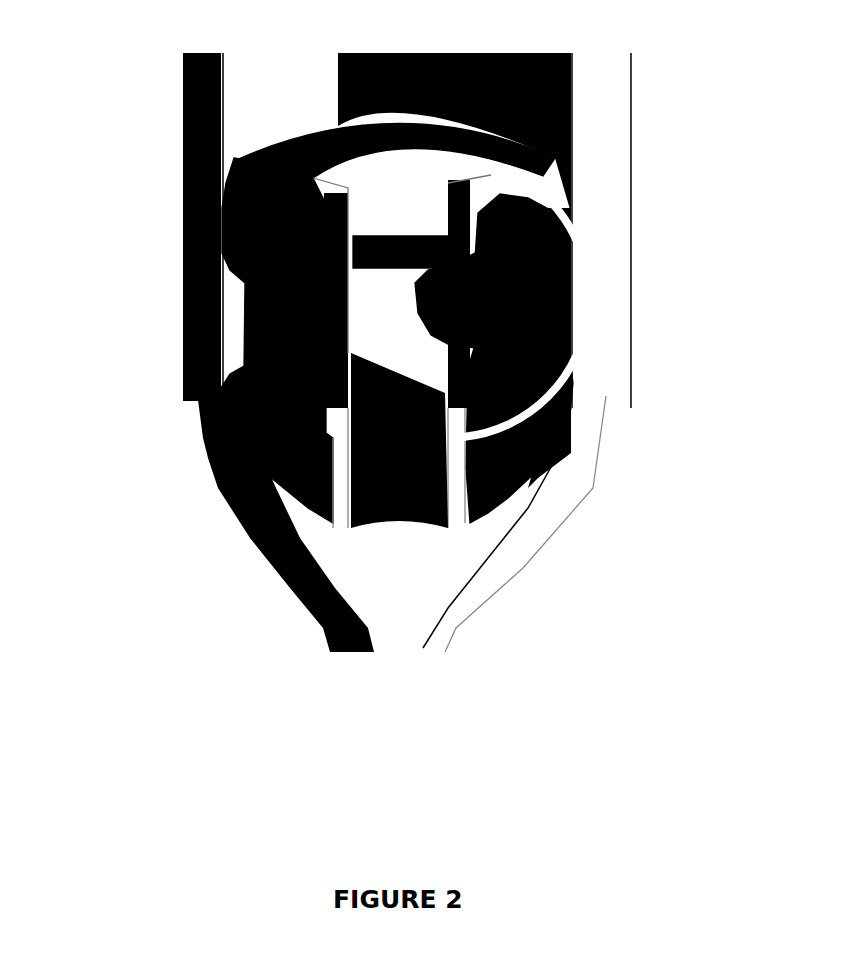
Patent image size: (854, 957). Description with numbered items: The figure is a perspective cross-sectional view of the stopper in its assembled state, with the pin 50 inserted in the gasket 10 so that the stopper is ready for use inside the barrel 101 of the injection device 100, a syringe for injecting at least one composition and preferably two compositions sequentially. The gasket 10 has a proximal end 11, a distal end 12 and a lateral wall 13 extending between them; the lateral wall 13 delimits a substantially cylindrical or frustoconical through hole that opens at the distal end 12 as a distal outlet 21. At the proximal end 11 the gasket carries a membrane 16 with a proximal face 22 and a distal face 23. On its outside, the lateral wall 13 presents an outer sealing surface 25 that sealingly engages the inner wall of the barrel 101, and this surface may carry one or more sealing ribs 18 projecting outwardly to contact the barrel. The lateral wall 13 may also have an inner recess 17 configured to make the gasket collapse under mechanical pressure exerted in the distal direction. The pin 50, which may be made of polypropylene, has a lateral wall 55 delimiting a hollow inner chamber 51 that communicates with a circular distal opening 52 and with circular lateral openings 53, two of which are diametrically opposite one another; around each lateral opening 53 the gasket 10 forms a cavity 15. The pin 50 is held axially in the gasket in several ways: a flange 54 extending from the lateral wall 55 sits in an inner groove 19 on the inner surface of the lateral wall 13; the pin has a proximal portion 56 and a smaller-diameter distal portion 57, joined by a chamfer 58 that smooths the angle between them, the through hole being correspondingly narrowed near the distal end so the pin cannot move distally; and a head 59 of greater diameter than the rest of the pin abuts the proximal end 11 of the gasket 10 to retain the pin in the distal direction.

The injection device 100 is at (178, 70).
The barrel 101 is at (582, 78).
The gasket 10 is at (238, 275).
The proximal end 11 is at (383, 122).
The distal end 12 is at (477, 502).
The lateral wall 13 is at (237, 340).
The cavity 15 is at (492, 278).
The membrane 16 is at (497, 193).
The inner recess 17 is at (537, 313).
The sealing rib 18 is at (218, 235).
The inner groove 19 is at (300, 205).
The distal outlet 21 is at (383, 522).
The proximal face 22 is at (500, 175).
The distal face 23 is at (497, 207).
The outer sealing surface 25 is at (568, 379).
The pin 50 is at (315, 312).
The inner chamber 51 is at (402, 429).
The distal opening 52 is at (427, 521).
The lateral opening 53 is at (425, 356).
The flange 54 is at (300, 227).
The lateral wall 55 is at (457, 460).
The proximal portion 56 is at (312, 385).
The distal portion 57 is at (325, 460).
The chamfer 58 is at (315, 414).
The head 59 is at (305, 175).